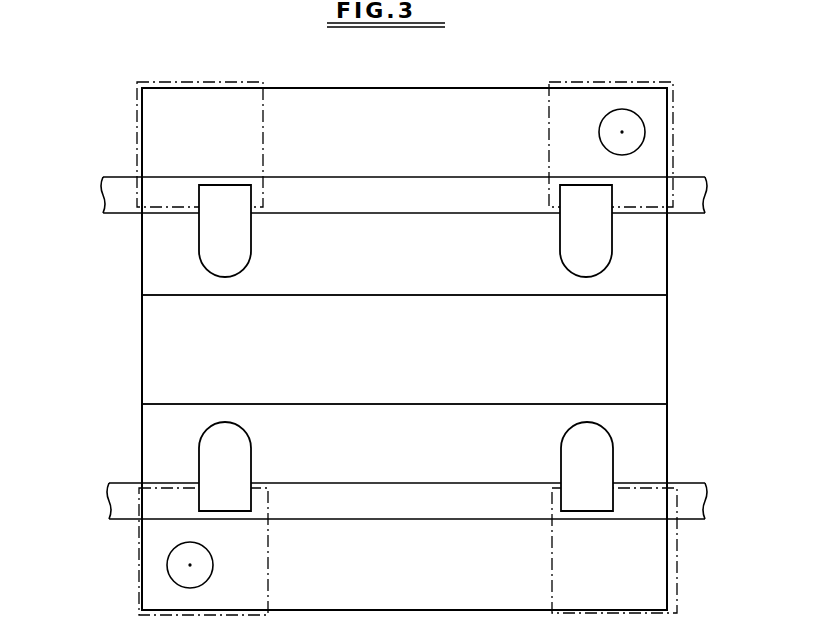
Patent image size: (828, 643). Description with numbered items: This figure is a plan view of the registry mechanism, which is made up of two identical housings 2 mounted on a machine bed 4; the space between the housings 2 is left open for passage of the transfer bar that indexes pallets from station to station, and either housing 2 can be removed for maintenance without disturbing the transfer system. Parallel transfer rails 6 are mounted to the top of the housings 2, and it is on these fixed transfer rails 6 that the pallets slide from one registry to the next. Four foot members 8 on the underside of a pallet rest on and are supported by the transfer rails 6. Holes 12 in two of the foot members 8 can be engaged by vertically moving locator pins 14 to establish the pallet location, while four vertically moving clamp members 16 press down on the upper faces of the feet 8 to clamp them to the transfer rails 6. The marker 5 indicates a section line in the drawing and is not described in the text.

The housing 2 is at (655, 268).
The machine bed 4 is at (668, 350).
The section line 5- 5 is at (127, 524).
The transfer rail 6 is at (317, 193).
The foot member 8 is at (222, 82).
The hole 12 is at (645, 131).
The locator pin 14 is at (633, 137).
The clamp member 16 is at (251, 258).